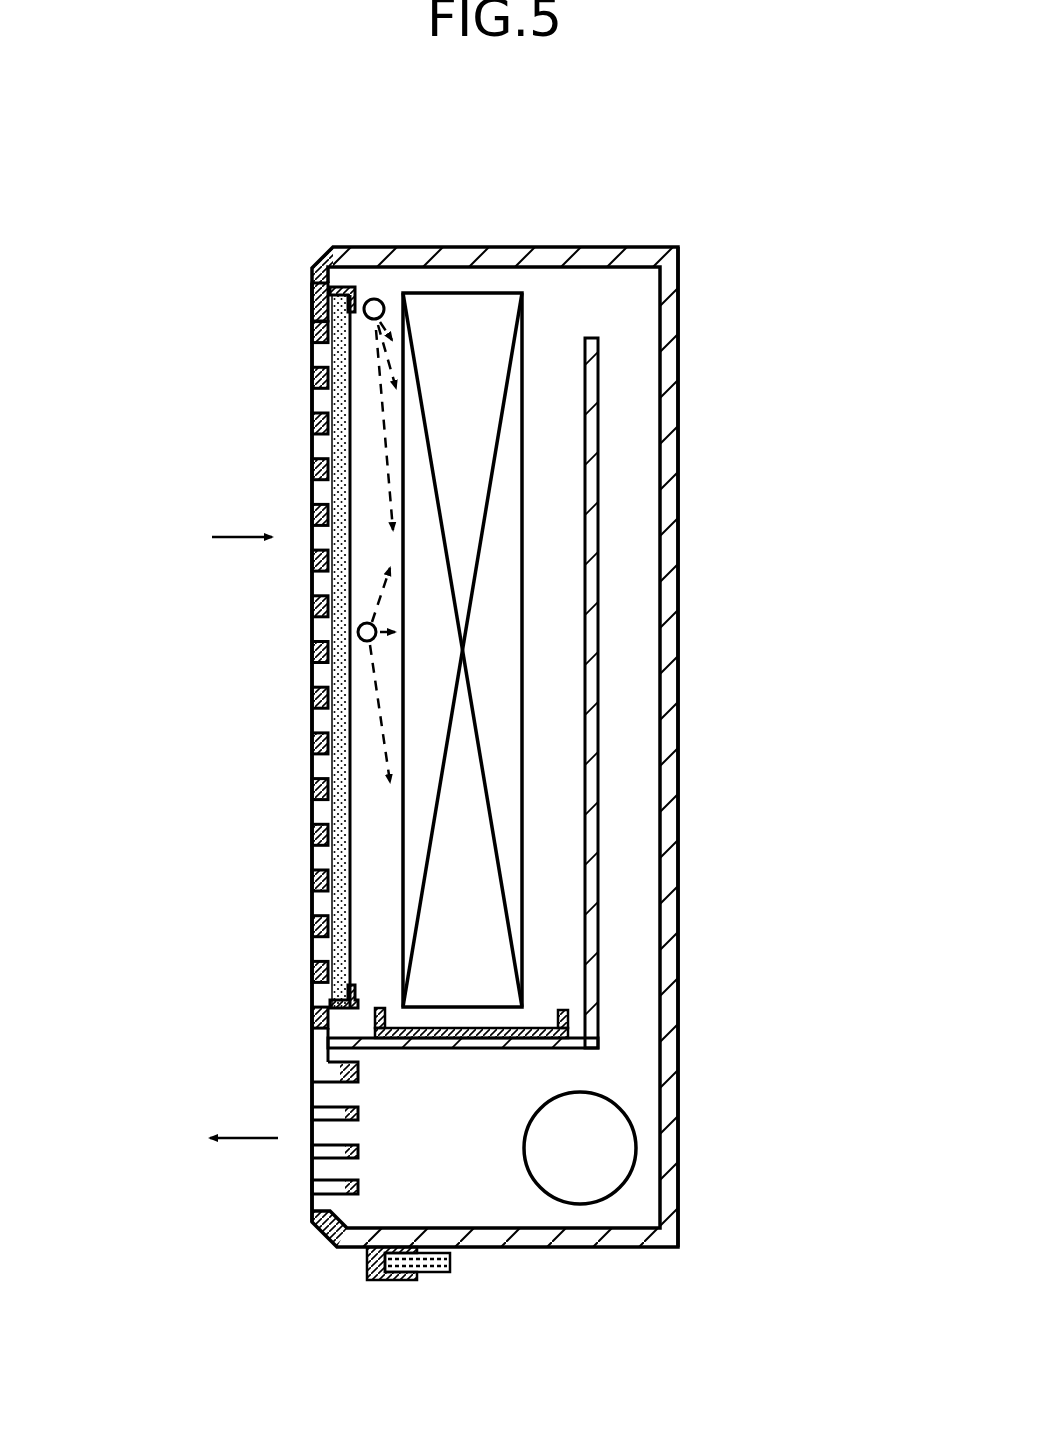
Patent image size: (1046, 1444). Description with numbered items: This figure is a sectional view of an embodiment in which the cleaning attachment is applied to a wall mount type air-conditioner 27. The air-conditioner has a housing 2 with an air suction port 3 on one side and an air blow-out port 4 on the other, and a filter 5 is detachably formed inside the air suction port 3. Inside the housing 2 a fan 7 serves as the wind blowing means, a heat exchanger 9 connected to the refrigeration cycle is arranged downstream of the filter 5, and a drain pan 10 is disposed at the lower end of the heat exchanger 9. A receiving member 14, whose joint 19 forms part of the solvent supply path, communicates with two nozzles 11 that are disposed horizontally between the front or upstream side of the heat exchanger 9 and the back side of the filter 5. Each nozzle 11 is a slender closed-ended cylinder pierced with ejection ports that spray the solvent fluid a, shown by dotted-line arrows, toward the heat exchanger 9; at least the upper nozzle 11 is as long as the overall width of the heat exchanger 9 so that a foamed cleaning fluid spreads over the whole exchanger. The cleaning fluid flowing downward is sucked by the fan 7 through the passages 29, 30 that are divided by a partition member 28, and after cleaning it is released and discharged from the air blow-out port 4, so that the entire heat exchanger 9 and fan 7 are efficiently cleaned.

The housing 2 is at (680, 545).
The air suction port 3 is at (312, 625).
The air blow-out port 4 is at (312, 1165).
The filter 5 is at (330, 443).
The fan 7 is at (625, 1115).
The heat exchanger 9 is at (525, 663).
The drain pan 10 is at (565, 1010).
The nozzle 11 is at (372, 298).
The receiving member 14 is at (364, 1270).
The joint 19 is at (430, 1273).
The wall mount type air-conditioner 27 is at (692, 333).
The partition member 28 is at (595, 773).
The passage 29 is at (550, 470).
The passage 30 is at (640, 848).
The solvent fluid a is at (388, 467).